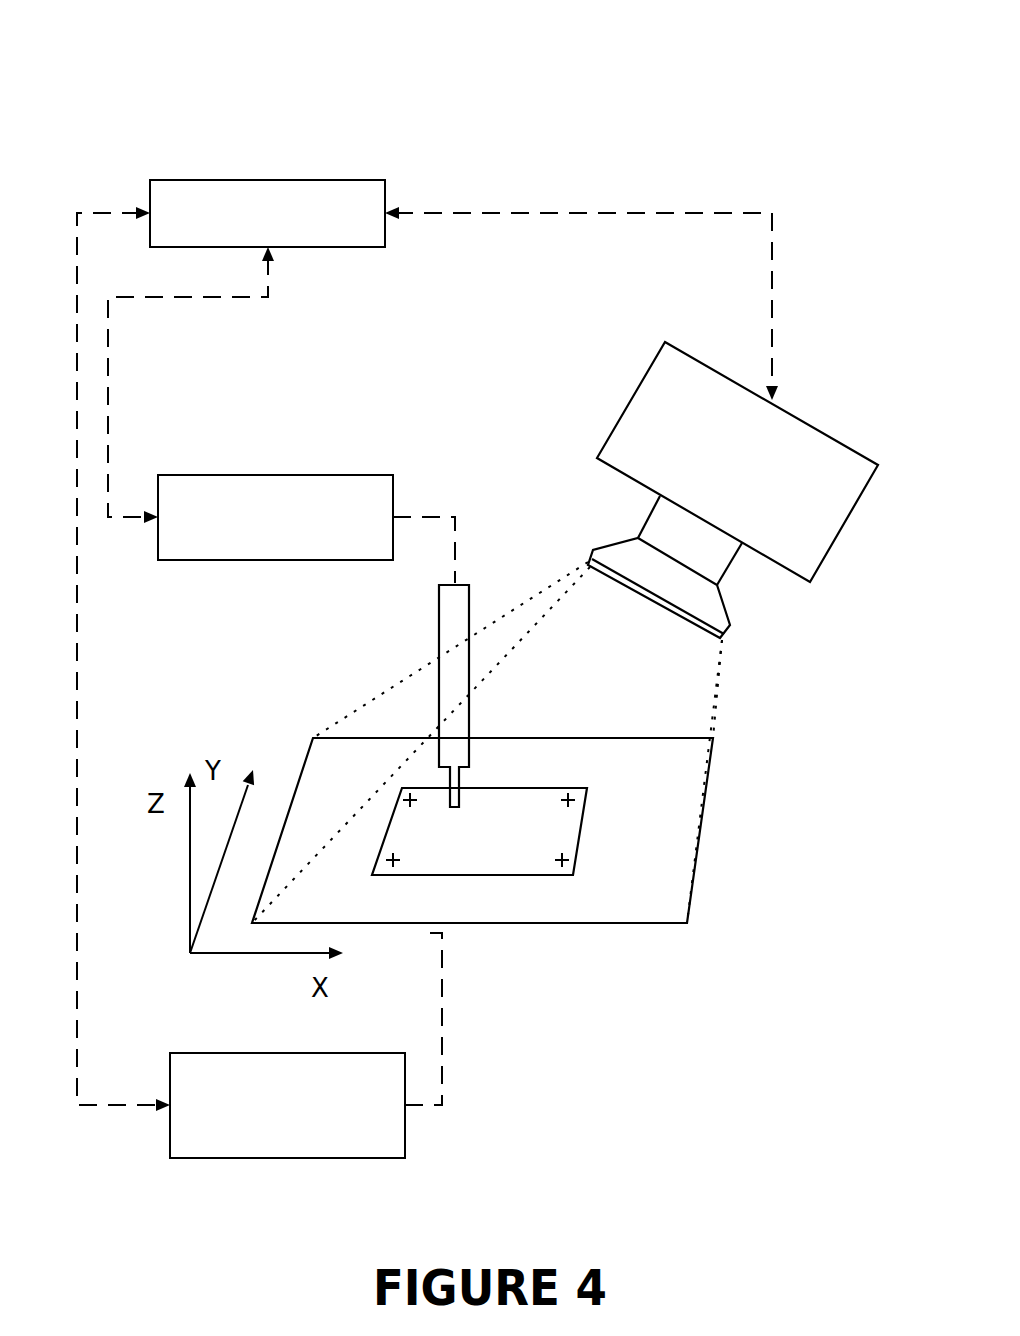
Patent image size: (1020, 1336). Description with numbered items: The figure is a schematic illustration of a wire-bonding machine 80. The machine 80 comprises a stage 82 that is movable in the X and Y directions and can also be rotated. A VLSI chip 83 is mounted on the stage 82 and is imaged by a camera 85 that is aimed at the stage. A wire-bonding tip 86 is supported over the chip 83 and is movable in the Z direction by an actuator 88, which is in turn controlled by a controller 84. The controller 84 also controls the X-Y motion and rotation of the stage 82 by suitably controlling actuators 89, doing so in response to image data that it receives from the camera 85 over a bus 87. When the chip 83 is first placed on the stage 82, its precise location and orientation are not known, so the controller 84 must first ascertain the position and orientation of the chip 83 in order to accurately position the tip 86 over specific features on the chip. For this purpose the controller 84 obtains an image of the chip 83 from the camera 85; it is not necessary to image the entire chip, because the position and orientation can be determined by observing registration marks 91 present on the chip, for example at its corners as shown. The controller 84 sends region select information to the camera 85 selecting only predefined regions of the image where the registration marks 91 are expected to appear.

The wire-bonding machine 80 is at (776, 70).
The stage 82 is at (655, 905).
The VLSI chip 83 is at (480, 875).
The controller 84 is at (268, 180).
The camera 85 is at (643, 408).
The wire-bonding tip 86 is at (457, 677).
The bus 87 is at (620, 213).
The actuator 88 is at (300, 475).
The actuators 89 is at (290, 1158).
The registration marks 91 is at (578, 798).